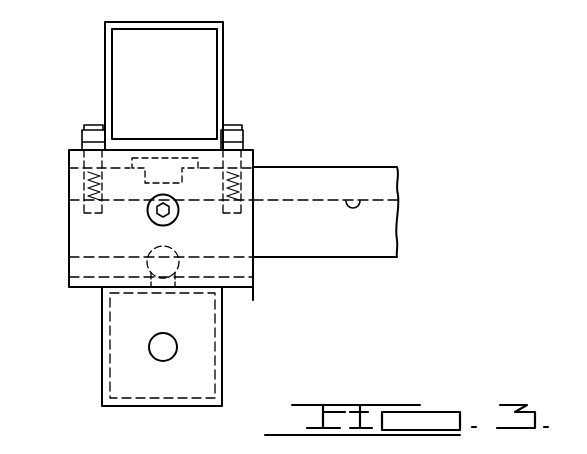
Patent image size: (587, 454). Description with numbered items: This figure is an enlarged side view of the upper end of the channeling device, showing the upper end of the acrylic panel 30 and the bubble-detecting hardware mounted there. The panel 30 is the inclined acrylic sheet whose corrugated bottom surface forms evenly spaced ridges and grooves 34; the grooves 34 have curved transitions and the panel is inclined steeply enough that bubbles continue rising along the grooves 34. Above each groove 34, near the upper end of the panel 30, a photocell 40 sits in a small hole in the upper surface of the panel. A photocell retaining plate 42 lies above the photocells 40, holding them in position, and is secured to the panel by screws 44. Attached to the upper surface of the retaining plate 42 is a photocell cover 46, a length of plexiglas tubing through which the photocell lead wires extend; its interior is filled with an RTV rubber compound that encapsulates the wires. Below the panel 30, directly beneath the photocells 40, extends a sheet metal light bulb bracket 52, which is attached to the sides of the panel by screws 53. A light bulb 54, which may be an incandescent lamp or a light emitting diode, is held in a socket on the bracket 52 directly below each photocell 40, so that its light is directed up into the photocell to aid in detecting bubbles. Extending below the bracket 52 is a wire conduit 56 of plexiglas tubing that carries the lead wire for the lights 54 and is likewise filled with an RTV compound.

The acrylic panel 30 is at (338, 238).
The groove 34 is at (353, 197).
The photocell 40 is at (157, 166).
The photocell retaining plate 42 is at (253, 155).
The screws 44 is at (88, 132).
The photocell cover 46 is at (224, 33).
The light bulb bracket 52 is at (248, 288).
The screws 53 is at (178, 217).
The light bulb 54 is at (152, 252).
The wire conduit 56 is at (118, 369).